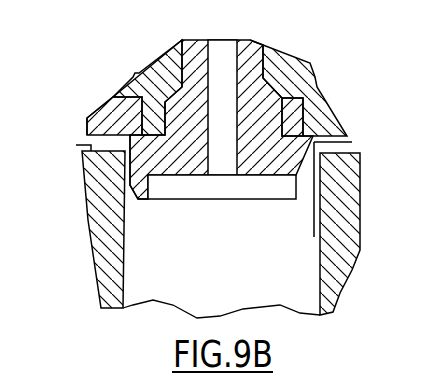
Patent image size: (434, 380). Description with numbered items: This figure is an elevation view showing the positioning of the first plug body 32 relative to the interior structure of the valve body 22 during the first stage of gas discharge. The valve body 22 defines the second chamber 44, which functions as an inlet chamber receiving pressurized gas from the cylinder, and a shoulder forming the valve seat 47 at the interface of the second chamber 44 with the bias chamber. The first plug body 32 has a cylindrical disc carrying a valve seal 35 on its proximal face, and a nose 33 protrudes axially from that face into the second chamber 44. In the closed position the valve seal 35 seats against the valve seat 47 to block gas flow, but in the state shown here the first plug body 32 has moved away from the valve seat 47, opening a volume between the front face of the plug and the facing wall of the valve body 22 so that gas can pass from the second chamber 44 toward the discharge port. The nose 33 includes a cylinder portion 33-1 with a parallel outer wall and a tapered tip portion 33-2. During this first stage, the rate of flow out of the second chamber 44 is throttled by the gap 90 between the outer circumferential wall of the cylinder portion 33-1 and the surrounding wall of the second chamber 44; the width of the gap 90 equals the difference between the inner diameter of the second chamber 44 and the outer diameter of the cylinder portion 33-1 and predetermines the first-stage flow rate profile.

The valve body 22 is at (102, 243).
The first plug body 32 is at (152, 66).
The nose 33 is at (305, 92).
The cylinder portion of the nose 33-1 is at (352, 142).
The vertical portion of second member 33-2 is at (314, 220).
The valve seal 35 is at (118, 120).
The second chamber 44 is at (239, 288).
The valve seat 47 is at (76, 145).
The gap 90 is at (128, 190).